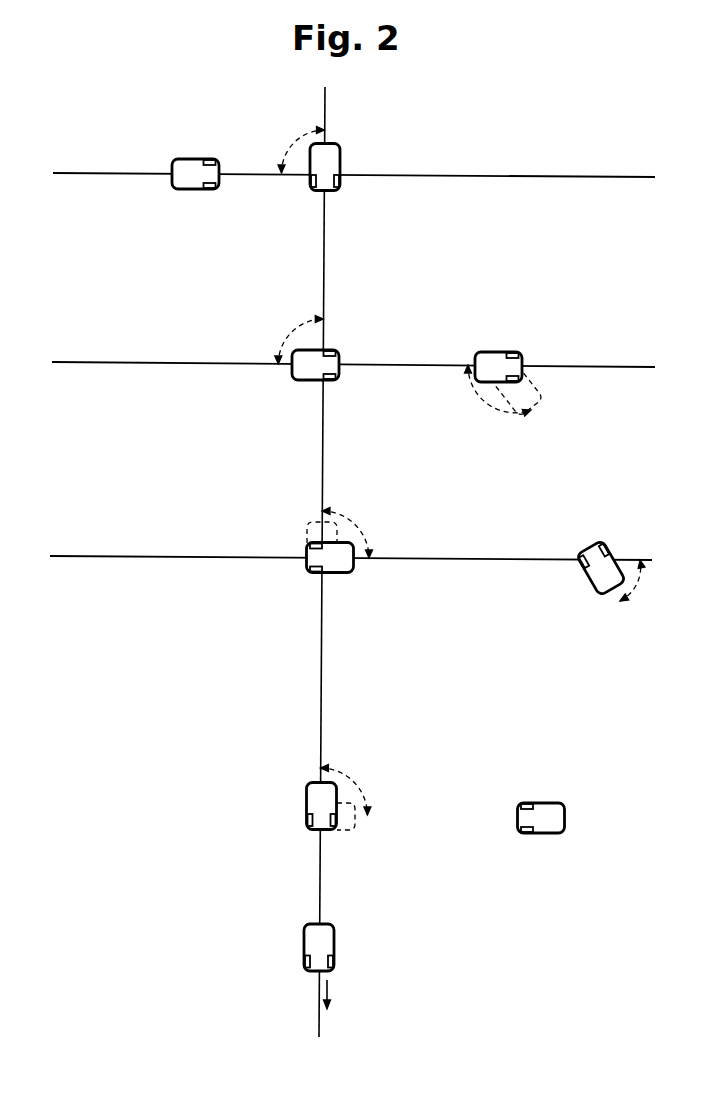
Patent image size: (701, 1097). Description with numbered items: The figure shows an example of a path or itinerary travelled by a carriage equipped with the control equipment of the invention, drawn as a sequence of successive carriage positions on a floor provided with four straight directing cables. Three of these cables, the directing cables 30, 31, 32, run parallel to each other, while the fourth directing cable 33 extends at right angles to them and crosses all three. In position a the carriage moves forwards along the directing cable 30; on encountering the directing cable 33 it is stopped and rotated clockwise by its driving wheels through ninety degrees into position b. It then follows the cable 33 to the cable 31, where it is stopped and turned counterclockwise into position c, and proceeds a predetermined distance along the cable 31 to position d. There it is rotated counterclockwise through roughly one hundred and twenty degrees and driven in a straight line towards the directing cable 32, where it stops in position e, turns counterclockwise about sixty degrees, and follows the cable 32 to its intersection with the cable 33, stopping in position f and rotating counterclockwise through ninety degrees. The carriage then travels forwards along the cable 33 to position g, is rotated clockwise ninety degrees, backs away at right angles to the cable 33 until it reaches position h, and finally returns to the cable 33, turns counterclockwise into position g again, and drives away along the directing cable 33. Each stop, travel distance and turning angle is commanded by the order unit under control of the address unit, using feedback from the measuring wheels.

The directing cable 30 is at (81, 175).
The directing cable 31 is at (81, 364).
The directing cable 32 is at (81, 558).
The directing cable 33 is at (322, 453).
The position a is at (198, 183).
The position b is at (338, 185).
The position c is at (335, 372).
The position d is at (496, 357).
The position e is at (595, 585).
The position f is at (346, 570).
The position g is at (315, 800).
The position h is at (548, 828).